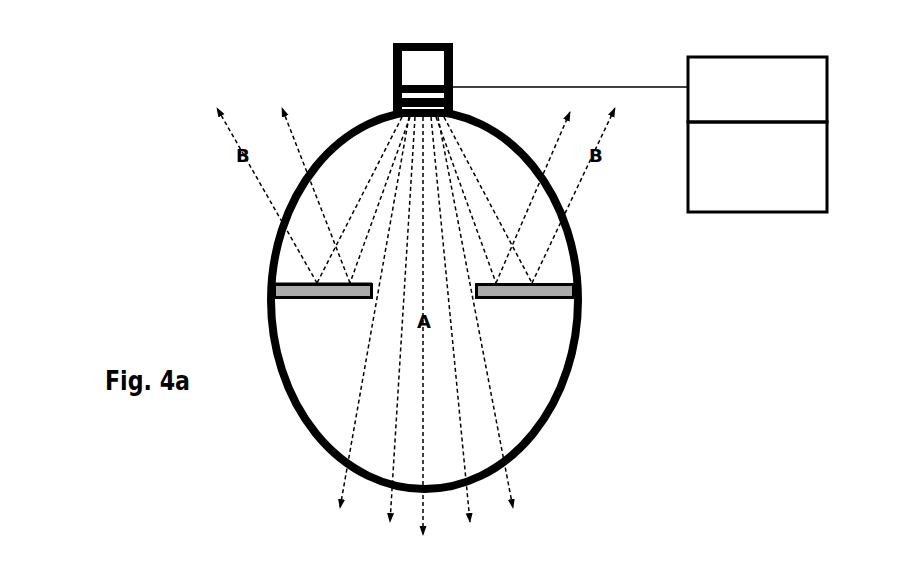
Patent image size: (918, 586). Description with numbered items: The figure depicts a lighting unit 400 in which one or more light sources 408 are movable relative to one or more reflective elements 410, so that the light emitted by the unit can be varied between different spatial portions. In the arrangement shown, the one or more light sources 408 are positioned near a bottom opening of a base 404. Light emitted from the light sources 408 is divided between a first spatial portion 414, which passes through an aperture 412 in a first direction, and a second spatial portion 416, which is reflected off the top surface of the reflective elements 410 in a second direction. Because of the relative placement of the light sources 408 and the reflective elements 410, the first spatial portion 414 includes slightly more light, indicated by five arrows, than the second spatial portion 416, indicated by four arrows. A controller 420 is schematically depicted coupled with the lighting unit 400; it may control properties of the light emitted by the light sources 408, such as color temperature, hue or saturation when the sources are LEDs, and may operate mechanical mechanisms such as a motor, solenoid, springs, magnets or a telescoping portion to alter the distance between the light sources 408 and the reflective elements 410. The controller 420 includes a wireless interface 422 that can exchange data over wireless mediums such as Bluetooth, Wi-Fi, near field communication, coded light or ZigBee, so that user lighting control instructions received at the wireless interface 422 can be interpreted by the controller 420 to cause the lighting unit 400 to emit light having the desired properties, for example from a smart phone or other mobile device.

The lighting unit 400 is at (79, 103).
The base 404 is at (393, 65).
The light sources 408 is at (422, 84).
The reflective elements 410 is at (297, 281).
The aperture 412 is at (373, 299).
The first spatial portion 414 is at (511, 424).
The second spatial portion 416 is at (297, 108).
The controller 420 is at (757, 89).
The wireless interface 422 is at (757, 167).